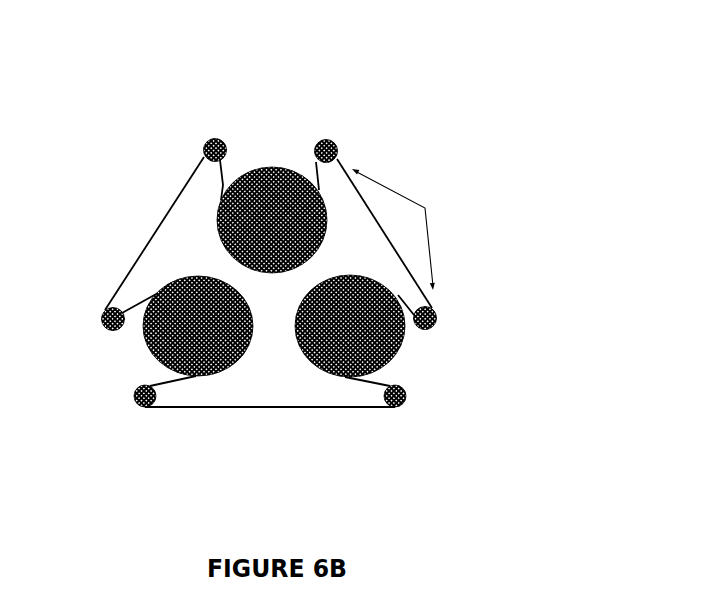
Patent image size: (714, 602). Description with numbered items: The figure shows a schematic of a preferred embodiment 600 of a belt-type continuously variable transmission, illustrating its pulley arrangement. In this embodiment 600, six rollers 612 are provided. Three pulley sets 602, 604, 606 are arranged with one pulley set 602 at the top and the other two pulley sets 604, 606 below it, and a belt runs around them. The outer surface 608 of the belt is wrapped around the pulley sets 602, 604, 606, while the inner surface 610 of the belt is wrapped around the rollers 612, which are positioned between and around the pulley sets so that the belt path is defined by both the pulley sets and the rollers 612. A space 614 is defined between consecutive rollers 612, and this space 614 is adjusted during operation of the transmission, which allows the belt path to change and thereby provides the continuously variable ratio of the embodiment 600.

The belt-type continuously variable transmission 600 is at (515, 92).
The pulley set 602 is at (286, 151).
The pulley set 604 is at (127, 353).
The pulley set 606 is at (406, 363).
The outer surface of the belt 608 is at (280, 424).
The inner surface of the belt 610 is at (188, 211).
The rollers 612 is at (333, 128).
The space 614 is at (417, 229).